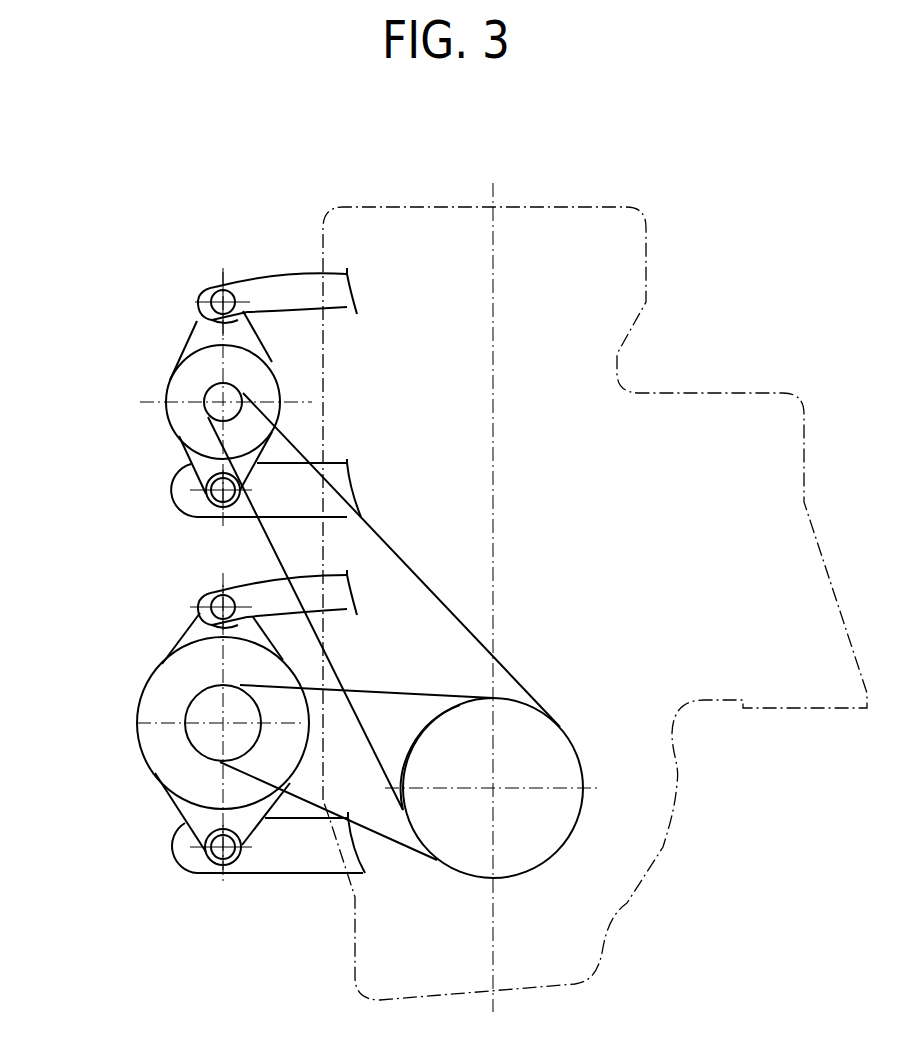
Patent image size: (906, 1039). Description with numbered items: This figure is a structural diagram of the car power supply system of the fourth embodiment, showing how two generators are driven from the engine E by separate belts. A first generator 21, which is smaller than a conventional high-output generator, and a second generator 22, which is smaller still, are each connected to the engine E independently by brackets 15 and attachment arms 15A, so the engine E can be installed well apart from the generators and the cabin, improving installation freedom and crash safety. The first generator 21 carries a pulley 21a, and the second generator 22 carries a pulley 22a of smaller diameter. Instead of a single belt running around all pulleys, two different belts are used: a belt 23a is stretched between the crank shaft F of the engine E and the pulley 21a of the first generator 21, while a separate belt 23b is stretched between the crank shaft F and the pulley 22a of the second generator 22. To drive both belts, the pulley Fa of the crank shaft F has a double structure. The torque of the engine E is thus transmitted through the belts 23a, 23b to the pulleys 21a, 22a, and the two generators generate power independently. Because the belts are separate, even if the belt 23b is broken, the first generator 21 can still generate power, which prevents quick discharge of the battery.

The bracket 15 is at (193, 333).
The attachment arm 15A is at (288, 280).
The first generator 21 is at (155, 774).
The pulley of the first generator 21a is at (195, 699).
The second generator 22 is at (187, 368).
The pulley of the second generator 22a is at (207, 393).
The belt 23a is at (363, 688).
The belt 23b is at (418, 560).
The crank shaft F is at (547, 742).
The pulley of the crank shaft Fa is at (433, 712).
The engine E is at (627, 887).